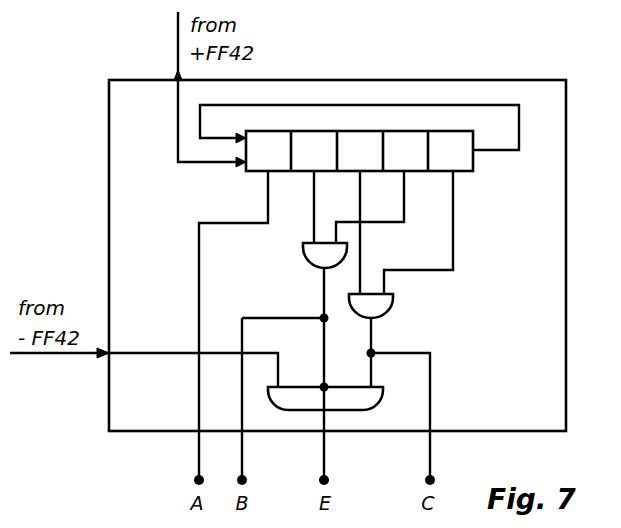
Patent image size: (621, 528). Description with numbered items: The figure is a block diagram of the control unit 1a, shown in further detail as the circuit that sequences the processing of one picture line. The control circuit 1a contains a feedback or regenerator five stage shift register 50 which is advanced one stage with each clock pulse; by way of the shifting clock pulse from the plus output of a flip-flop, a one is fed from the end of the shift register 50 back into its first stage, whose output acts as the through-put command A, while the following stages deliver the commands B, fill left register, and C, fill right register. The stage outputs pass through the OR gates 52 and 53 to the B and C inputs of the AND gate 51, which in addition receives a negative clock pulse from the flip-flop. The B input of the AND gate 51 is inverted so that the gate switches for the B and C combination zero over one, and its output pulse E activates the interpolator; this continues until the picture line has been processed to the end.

The control unit 1a is at (552, 340).
The five stage shift register 50 is at (461, 160).
The AND gate 51 is at (373, 396).
The OR gate 52 is at (303, 250).
The OR gate 53 is at (394, 300).